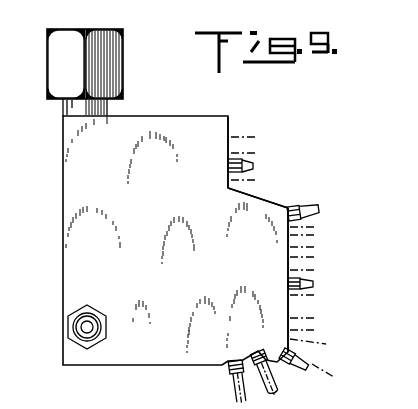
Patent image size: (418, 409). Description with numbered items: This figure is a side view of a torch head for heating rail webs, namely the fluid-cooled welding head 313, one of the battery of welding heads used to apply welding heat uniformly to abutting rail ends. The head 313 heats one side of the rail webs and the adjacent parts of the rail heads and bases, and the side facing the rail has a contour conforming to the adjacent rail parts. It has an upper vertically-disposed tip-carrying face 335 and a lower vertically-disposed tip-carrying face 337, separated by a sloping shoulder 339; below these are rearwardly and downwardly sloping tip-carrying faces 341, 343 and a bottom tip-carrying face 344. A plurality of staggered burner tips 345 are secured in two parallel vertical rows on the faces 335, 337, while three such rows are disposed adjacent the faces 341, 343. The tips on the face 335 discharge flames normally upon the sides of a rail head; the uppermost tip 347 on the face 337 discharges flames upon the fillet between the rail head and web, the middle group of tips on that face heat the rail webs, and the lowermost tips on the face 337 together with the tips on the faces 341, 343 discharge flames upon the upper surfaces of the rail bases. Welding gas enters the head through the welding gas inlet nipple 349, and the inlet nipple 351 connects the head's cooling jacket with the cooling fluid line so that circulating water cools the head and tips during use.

The welding head 313 is at (64, 178).
The upper tip-carrying face 335 is at (242, 108).
The sloping shoulder 339 is at (270, 200).
The lower tip-carrying face 337 is at (289, 311).
The rearwardly and downwardly sloping tip-carrying face 341 is at (308, 365).
The rearwardly and downwardly sloping tip-carrying face 343 is at (272, 381).
The bottom tip-carrying face 344 is at (226, 370).
The burner tip 345 is at (252, 165).
The uppermost tip 347 is at (321, 212).
The welding gas inlet nipple 349 is at (115, 62).
The inlet nipple 351 is at (66, 330).